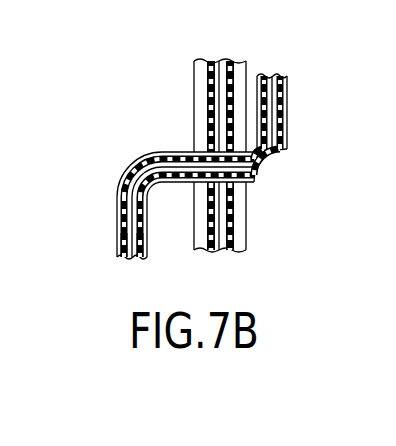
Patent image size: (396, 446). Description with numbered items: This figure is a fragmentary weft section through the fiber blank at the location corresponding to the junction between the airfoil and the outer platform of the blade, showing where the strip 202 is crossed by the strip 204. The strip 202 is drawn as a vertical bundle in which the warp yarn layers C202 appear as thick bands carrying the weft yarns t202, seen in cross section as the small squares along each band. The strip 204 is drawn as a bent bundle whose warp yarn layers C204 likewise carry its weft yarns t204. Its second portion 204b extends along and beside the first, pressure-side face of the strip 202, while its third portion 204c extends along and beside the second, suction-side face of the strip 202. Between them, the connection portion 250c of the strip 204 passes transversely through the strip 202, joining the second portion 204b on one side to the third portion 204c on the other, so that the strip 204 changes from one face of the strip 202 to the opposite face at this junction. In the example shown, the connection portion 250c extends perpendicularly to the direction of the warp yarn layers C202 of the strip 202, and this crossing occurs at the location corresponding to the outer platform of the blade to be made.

The strip 202 is at (237, 159).
The strip 204 is at (210, 162).
The warp yarn layers C202 is at (239, 253).
The warp yarn layers C204 is at (132, 250).
The weft yarns t202 is at (226, 212).
The weft yarns t204 is at (148, 172).
The second portion 204b is at (108, 219).
The third portion 204c is at (280, 84).
The connection portion 250c is at (277, 157).